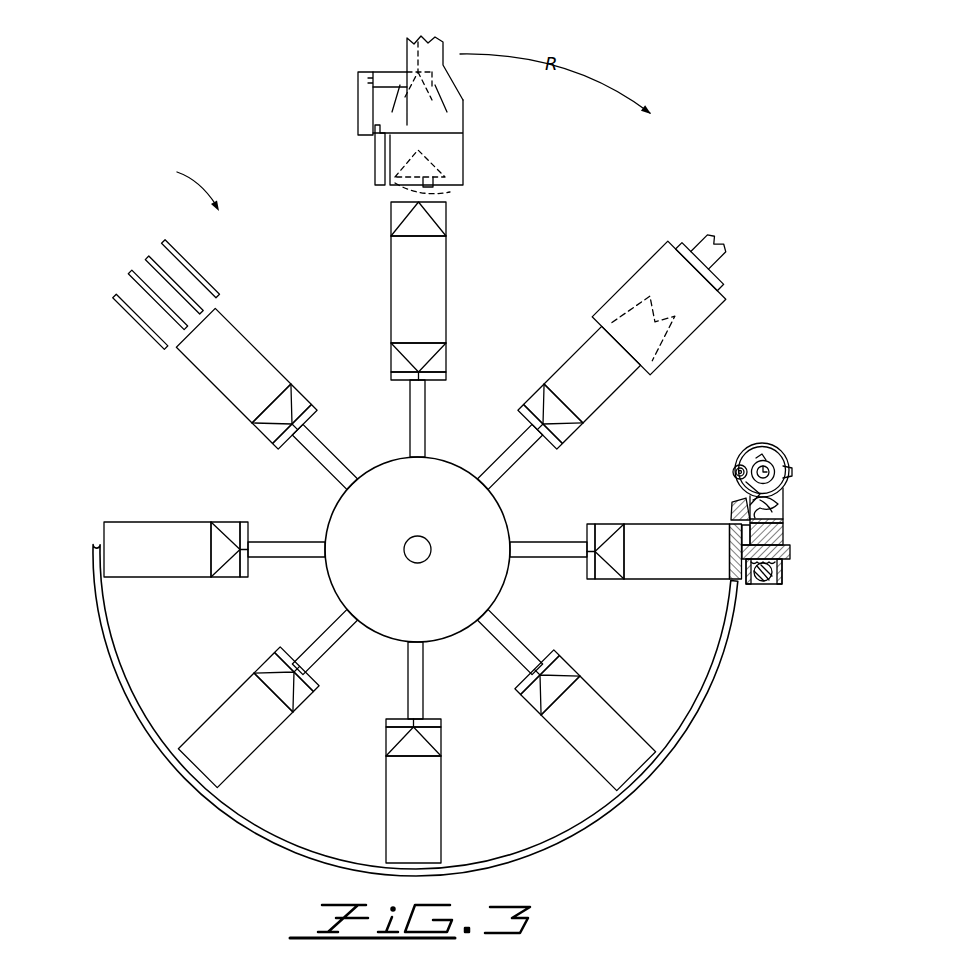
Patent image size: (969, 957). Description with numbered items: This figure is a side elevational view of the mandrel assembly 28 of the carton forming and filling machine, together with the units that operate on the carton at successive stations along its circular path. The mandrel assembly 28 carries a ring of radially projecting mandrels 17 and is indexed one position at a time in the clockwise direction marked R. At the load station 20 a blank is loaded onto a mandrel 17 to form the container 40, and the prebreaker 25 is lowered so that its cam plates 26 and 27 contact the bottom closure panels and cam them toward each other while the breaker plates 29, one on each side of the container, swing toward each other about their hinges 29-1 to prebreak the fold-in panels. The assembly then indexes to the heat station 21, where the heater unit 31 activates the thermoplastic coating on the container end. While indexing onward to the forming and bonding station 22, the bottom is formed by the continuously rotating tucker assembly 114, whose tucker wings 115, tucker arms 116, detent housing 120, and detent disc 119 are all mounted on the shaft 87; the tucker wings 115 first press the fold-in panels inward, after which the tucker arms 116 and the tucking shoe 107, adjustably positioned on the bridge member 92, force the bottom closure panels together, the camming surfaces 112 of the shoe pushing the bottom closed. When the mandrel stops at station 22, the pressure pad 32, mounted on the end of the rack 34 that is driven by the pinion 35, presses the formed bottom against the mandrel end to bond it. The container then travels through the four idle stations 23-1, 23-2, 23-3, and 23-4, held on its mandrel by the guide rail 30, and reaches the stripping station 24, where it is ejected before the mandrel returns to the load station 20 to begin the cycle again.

The mandrel 17 is at (520, 446).
The load station 20 is at (427, 69).
The heat station 21 is at (726, 244).
The forming and bonding station 22 is at (747, 499).
The idle station 23-1 is at (607, 733).
The idle station 23-2 is at (437, 809).
The idle station 23-3 is at (235, 734).
The idle station 23-4 is at (129, 549).
The stripping station 24 is at (163, 307).
The prebreaker 25 is at (470, 125).
The cam plate 26 is at (445, 92).
The cam plate 27 is at (400, 100).
The mandrel assembly 28 is at (186, 189).
The breaker plate 29 is at (418, 150).
The hinge 29-1 is at (450, 192).
The guide rail 30 is at (128, 690).
The heater unit 31 is at (716, 310).
The pressure pad 32 is at (730, 570).
The rack 34 is at (785, 565).
The pinion 35 is at (770, 585).
The container 40 is at (437, 262).
The shaft 87 is at (771, 465).
The bridge member 92 is at (783, 525).
The tucking shoe 107 is at (729, 488).
The camming surface 112 is at (730, 510).
The tucker assembly 114 is at (749, 454).
The tucker wing 115 is at (788, 468).
The tucker arm 116 is at (790, 489).
The detent disc 119 is at (770, 446).
The detent housing 120 is at (740, 465).